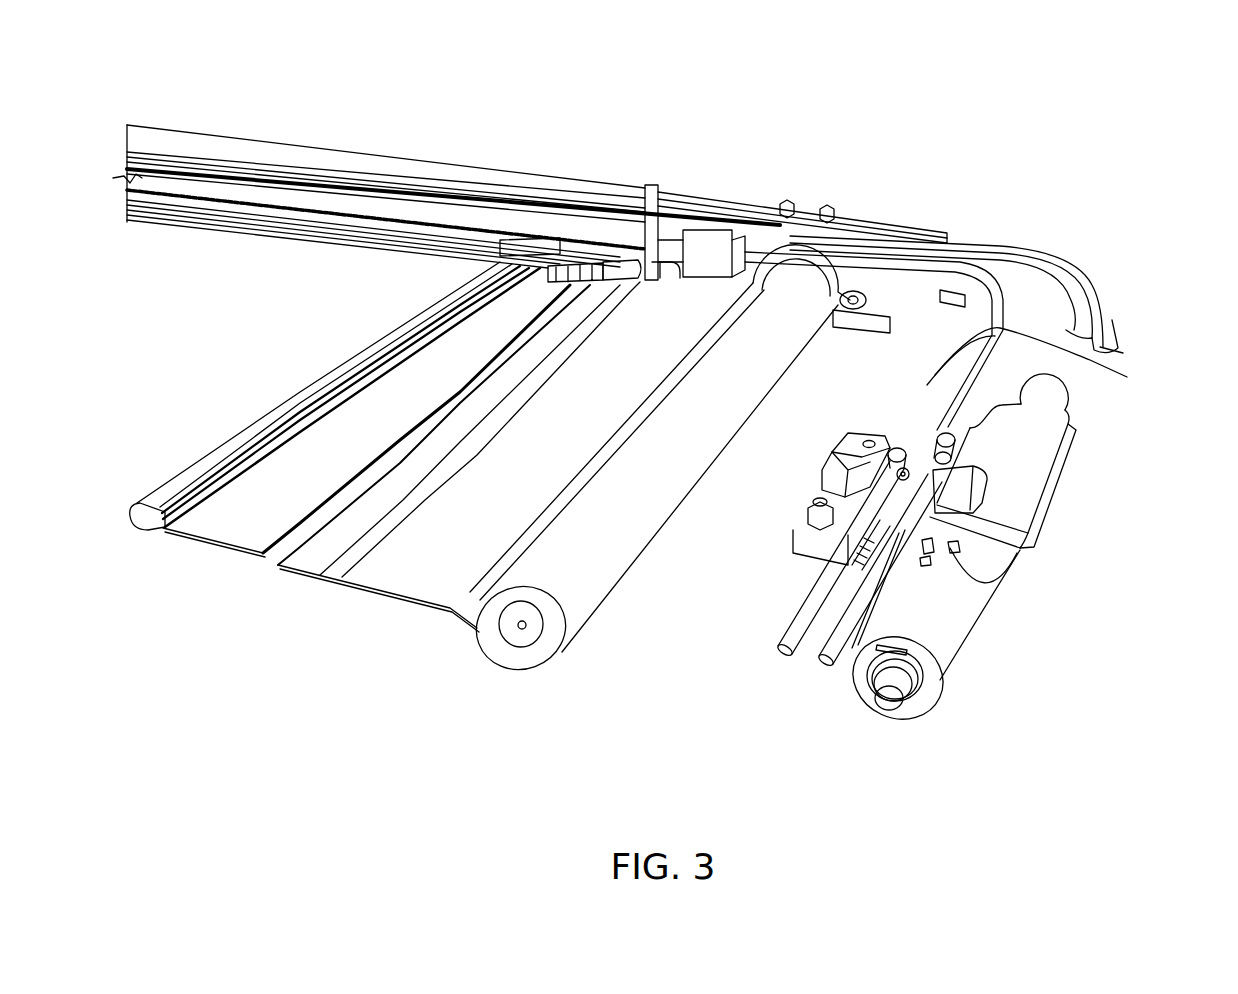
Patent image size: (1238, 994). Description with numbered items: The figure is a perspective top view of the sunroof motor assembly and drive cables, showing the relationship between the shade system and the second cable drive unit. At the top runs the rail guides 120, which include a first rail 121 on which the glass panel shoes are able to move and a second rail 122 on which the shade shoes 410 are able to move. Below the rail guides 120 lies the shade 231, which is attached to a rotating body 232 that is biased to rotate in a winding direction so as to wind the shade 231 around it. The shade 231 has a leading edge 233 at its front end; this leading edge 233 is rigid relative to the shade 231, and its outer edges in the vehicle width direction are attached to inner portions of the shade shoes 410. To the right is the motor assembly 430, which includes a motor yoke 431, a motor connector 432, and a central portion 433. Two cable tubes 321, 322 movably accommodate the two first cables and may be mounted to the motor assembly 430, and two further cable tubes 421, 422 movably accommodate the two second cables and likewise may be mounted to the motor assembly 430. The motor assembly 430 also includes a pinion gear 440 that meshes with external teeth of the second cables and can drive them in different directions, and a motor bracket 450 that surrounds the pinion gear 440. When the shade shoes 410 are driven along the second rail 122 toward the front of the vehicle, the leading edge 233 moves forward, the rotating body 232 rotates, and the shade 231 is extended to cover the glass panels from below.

The rail guides 120 is at (446, 182).
The first rail 121 is at (530, 190).
The second rail 122 is at (318, 232).
The shade 231 is at (402, 578).
The rotating body 232 is at (524, 632).
The leading edge 233 is at (162, 535).
The cable tube 321 is at (1112, 326).
The cable tube 322 is at (1088, 272).
The shade shoes 410 is at (498, 268).
The cable tube 421 is at (1127, 377).
The cable tube 422 is at (963, 268).
The motor assembly 430 is at (976, 554).
The motor yoke 431 is at (952, 627).
The motor connector 432 is at (1062, 396).
The central portion 433 is at (1018, 492).
The pinion gear 440 is at (890, 448).
The motor bracket 450 is at (850, 440).